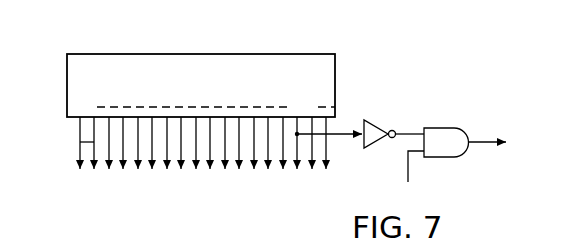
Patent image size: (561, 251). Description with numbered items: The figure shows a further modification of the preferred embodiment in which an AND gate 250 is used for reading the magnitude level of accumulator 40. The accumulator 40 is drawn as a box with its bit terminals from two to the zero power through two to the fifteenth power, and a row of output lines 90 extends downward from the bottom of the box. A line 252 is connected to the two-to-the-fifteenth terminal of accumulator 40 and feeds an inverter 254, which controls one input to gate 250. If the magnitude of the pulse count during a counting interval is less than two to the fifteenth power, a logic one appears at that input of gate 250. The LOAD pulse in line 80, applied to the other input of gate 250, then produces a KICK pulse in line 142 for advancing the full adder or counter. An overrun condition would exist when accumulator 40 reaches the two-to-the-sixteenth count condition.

The accumulator 40 is at (270, 52).
The accumulator output lines 90 is at (80, 142).
The line 252 is at (345, 136).
The inverter 254 is at (375, 128).
The AND gate 250 is at (447, 140).
The line 80 is at (409, 168).
The line 142 is at (487, 142).